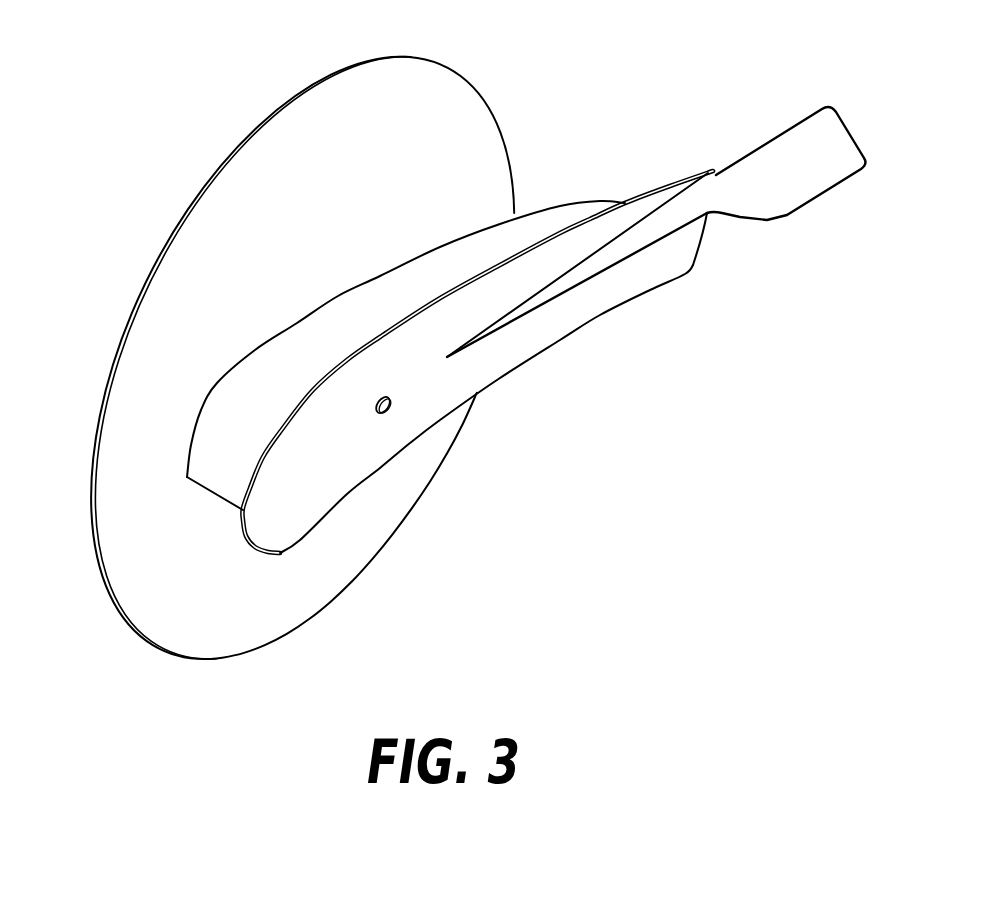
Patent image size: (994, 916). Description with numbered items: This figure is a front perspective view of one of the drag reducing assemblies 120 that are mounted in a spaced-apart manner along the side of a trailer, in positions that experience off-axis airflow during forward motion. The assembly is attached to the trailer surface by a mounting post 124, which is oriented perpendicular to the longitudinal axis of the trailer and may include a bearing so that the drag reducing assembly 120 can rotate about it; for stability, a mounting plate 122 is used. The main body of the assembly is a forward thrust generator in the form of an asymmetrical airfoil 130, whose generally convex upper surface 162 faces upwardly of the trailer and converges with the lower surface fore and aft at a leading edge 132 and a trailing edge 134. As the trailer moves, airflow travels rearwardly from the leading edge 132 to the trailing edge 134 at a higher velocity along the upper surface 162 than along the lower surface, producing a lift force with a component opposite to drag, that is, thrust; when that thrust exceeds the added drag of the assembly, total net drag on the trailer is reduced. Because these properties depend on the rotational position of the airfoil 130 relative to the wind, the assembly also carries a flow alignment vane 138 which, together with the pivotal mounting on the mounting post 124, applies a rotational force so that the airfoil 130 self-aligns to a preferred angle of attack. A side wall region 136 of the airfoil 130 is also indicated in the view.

The drag reducing assembly 120 is at (97, 152).
The mounting plate 122 is at (350, 100).
The mounting post 124 is at (387, 410).
The asymmetrical airfoil 130 is at (303, 345).
The leading edge 132 is at (217, 495).
The trailing edge 134 is at (623, 203).
The side wall 136 is at (657, 266).
The flow alignment vane 138 is at (808, 167).
The upper surface 162 is at (487, 230).